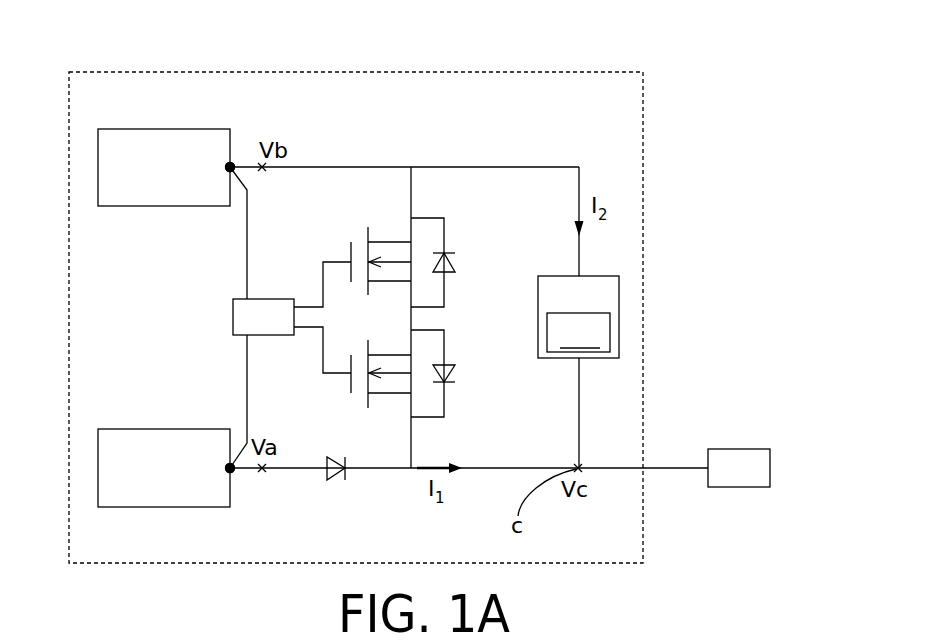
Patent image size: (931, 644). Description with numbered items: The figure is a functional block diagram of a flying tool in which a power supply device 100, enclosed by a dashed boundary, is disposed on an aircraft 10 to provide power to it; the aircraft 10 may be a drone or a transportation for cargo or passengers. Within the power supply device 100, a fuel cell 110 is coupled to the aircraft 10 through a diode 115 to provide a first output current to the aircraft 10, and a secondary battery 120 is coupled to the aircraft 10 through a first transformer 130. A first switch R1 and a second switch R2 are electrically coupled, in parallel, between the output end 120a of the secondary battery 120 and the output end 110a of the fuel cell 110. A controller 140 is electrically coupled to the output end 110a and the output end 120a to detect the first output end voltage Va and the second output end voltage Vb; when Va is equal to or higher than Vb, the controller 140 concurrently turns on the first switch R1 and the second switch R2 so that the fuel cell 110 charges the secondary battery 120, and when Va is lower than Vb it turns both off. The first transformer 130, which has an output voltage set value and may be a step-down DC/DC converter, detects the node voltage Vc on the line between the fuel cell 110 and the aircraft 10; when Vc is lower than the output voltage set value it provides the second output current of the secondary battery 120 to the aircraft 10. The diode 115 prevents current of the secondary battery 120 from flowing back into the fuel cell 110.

The power supply device 100 is at (358, 72).
The secondary battery 120 is at (186, 180).
The output end of the secondary battery 120a is at (232, 165).
The fuel cell 110 is at (186, 482).
The output end of the fuel cell 110a is at (232, 470).
The controller 140 is at (285, 331).
The first transformer 130 is at (600, 306).
The aircraft 10 is at (754, 481).
The diode 115 is at (337, 481).
The first switch R1 is at (338, 390).
The second switch R2 is at (338, 245).